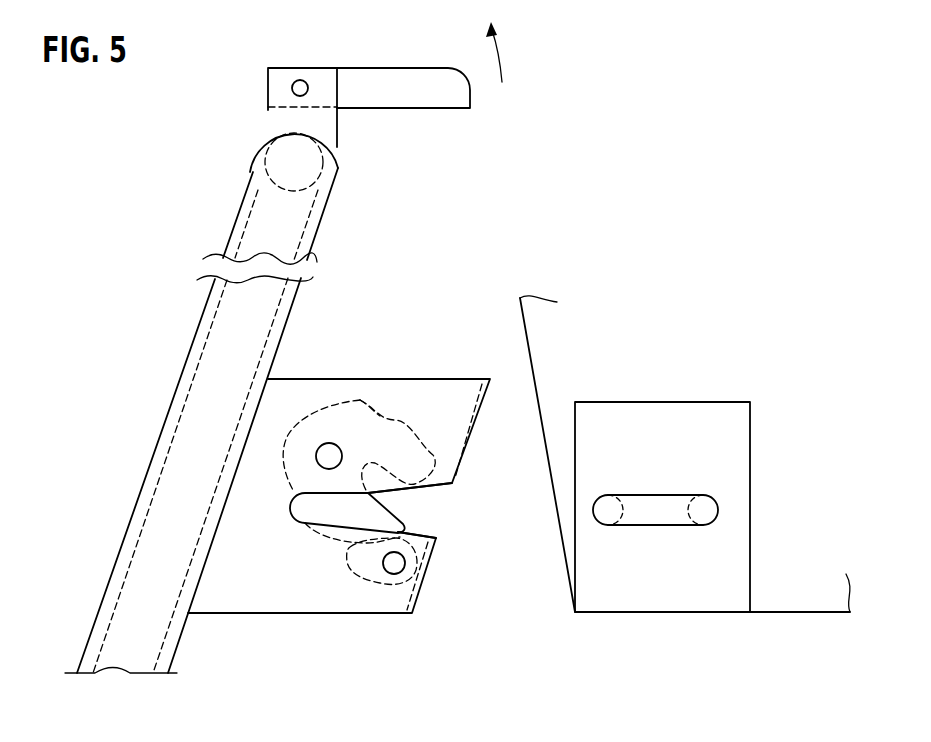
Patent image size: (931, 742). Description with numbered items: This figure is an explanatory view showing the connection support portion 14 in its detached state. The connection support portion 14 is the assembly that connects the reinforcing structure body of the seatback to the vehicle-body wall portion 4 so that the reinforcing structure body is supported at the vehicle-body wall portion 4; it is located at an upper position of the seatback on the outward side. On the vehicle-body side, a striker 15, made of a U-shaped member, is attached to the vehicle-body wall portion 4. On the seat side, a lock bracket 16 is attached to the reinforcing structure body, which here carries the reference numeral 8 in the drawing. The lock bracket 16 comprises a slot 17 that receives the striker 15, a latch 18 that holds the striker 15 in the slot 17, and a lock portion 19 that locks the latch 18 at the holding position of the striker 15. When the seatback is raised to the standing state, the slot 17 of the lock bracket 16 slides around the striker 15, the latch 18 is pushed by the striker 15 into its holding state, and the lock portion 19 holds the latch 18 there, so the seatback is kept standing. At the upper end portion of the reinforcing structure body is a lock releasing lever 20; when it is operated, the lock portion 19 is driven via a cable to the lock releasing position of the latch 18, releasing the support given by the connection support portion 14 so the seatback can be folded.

The vehicle-body wall portion 4 is at (800, 600).
The support arm 8 is at (152, 447).
The connection support portion 14 is at (452, 612).
The striker 15 is at (657, 493).
The lock bracket 16 is at (315, 397).
The slot 17 is at (417, 507).
The latch 18 is at (385, 415).
The lock portion 19 is at (362, 577).
The lock releasing lever 20 is at (423, 75).